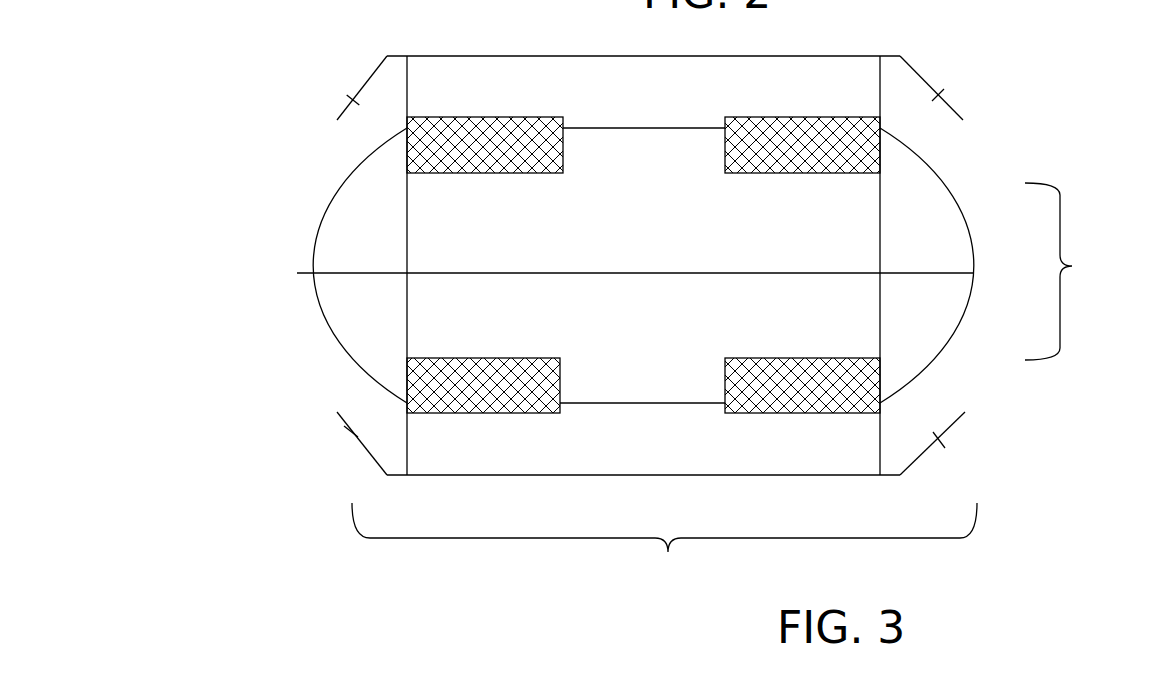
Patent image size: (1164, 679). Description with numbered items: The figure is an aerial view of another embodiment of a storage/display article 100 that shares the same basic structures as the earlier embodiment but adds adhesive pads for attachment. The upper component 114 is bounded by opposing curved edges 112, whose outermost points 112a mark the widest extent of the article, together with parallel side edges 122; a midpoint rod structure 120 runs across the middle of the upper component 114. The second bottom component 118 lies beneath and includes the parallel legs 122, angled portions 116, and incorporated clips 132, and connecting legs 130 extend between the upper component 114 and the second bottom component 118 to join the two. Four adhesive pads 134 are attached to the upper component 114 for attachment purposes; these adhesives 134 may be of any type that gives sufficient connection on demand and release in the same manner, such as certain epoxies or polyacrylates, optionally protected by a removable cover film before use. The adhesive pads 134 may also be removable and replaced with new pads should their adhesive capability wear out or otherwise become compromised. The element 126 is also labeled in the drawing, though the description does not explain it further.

The storage/display article 100 is at (999, 151).
The opposing curved edges 112 is at (322, 225).
The outermost points of the curved edges 112a is at (297, 273).
The upper component 114 is at (1078, 271).
The angled portions 116 is at (345, 100).
The second bottom component 118 is at (664, 548).
The midpoint rod structure 120 is at (637, 272).
The parallel side edges 122 is at (617, 400).
The bottom surface 126 is at (660, 476).
The connecting legs 130 is at (407, 433).
The incorporated clips 132 is at (968, 78).
The adhesive pads 134 is at (475, 148).